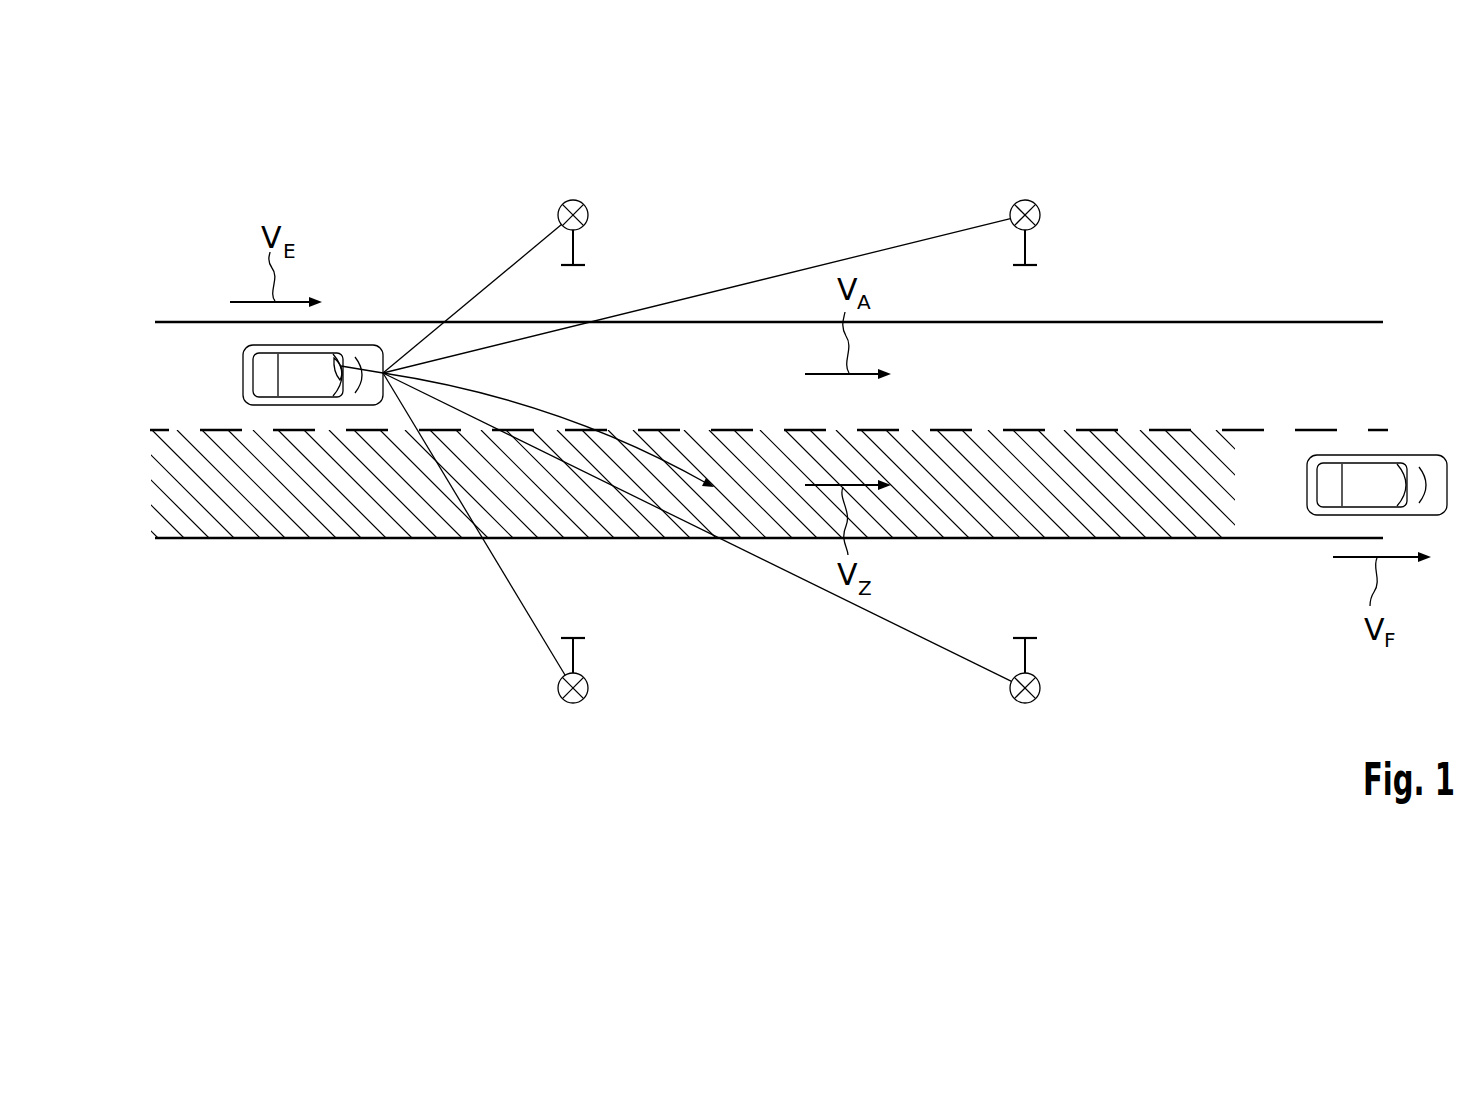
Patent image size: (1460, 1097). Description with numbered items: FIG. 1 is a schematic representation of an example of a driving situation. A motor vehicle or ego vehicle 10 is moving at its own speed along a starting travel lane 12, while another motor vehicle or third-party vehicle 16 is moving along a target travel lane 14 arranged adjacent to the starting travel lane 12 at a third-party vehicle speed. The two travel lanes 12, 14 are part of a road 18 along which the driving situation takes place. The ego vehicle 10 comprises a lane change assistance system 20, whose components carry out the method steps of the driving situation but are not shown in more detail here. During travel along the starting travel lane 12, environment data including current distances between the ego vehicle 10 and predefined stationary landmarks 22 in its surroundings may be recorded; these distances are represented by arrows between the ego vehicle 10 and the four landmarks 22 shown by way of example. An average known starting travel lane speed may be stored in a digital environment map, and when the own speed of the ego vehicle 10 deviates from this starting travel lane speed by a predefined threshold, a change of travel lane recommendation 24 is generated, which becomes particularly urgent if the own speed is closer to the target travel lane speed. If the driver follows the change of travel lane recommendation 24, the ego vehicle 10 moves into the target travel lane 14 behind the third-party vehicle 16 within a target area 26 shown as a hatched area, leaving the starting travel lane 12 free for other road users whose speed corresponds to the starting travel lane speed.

The ego vehicle 10 is at (243, 368).
The starting travel lane 12 is at (176, 380).
The target travel lane 14 is at (166, 488).
The third-party vehicle 16 is at (1414, 455).
The road 18 is at (1306, 290).
The lane change assistance system 20 is at (340, 364).
The stationary landmarks 22 is at (588, 215).
The change of travel lane recommendation 24 is at (538, 411).
The target area 26 is at (1108, 518).